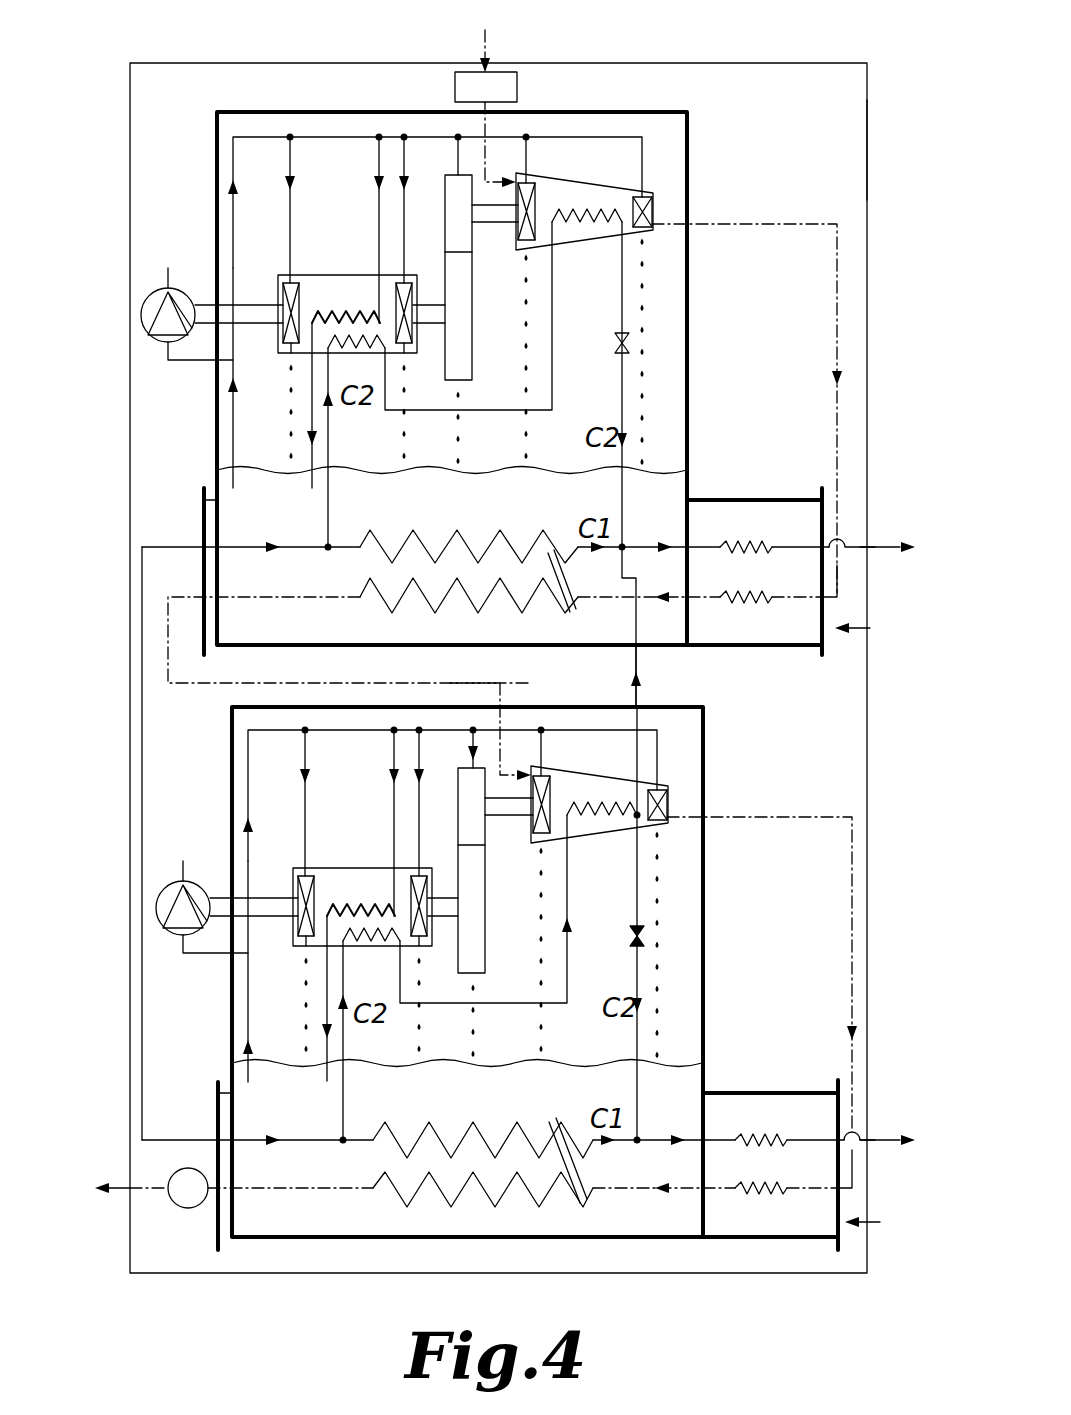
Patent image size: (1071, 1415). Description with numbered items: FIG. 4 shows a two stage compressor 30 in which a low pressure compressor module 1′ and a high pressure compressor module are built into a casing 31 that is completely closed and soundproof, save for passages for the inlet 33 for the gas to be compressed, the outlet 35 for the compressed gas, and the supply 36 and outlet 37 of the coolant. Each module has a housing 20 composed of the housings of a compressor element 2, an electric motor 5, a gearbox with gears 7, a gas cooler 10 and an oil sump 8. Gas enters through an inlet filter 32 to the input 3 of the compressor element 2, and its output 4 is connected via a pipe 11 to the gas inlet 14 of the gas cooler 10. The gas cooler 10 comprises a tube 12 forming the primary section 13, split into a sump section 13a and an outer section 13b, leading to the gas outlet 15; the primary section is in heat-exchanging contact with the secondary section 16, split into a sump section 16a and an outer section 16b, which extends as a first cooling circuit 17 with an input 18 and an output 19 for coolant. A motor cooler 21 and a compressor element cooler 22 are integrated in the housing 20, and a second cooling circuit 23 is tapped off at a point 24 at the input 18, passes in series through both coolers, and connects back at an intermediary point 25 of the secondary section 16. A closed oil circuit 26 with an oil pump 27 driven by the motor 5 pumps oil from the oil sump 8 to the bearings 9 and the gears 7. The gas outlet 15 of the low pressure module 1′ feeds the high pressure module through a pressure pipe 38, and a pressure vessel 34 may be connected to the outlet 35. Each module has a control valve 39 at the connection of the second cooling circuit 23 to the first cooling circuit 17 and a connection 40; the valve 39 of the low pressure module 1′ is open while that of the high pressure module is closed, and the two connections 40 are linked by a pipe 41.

The low pressure compressor module 1′ is at (687, 418).
The compressor element 2 is at (627, 210).
The input 3 is at (488, 108).
The output 4 is at (688, 227).
The electric motor 5 is at (325, 290).
The gears 7 is at (458, 200).
The oil sump 8 is at (253, 630).
The bearings 9 is at (645, 195).
The gas cooler 10 is at (873, 928).
The pipe 11 is at (837, 422).
The tube 12 is at (722, 645).
The primary section 13 is at (470, 603).
The sump section of the primary section 13a is at (420, 597).
The outer section of the primary section 13b is at (762, 598).
The gas inlet 14 is at (838, 595).
The gas outlet 15 is at (213, 1183).
The secondary section 16 is at (548, 553).
The sump section of the secondary section 16a is at (500, 548).
The outer section of the secondary section 16b is at (770, 545).
The first cooling circuit 17 is at (268, 545).
The input 18 is at (216, 537).
The output 19 is at (845, 563).
The housing 20 is at (687, 392).
The motor cooler 21 is at (368, 340).
The compressor element cooler 22 is at (590, 220).
The second cooling circuit 23 is at (328, 510).
The point 24 is at (330, 552).
The intermediary point 25 is at (628, 550).
The closed oil circuit 26 is at (233, 408).
The oil pump 27 is at (165, 313).
The two stage compressor 30 is at (878, 58).
The casing 31 is at (867, 155).
The inlet filter 32 is at (507, 86).
The inlet 33 is at (493, 62).
The pressure vessel 34 is at (180, 1203).
The outlet 35 is at (110, 1177).
The supply 36 is at (105, 806).
The outlet 37 is at (868, 550).
The pressure pipe 38 is at (497, 674).
The control valve 39 is at (629, 340).
The connection 40 is at (636, 645).
The pipe 41 is at (637, 715).